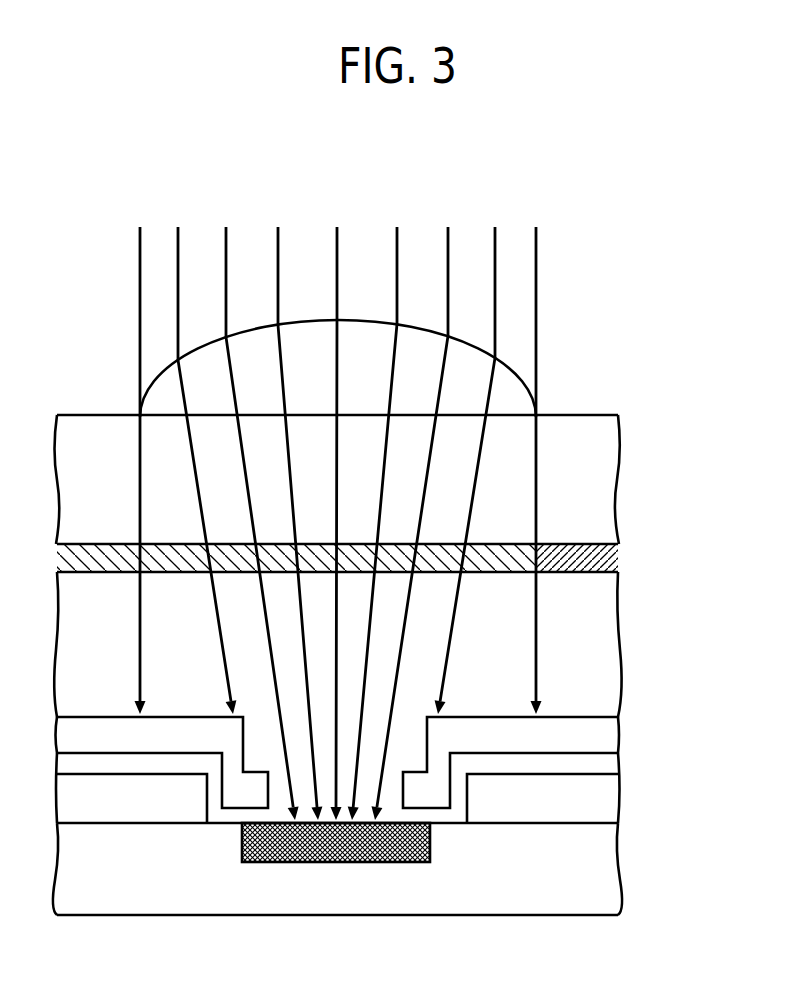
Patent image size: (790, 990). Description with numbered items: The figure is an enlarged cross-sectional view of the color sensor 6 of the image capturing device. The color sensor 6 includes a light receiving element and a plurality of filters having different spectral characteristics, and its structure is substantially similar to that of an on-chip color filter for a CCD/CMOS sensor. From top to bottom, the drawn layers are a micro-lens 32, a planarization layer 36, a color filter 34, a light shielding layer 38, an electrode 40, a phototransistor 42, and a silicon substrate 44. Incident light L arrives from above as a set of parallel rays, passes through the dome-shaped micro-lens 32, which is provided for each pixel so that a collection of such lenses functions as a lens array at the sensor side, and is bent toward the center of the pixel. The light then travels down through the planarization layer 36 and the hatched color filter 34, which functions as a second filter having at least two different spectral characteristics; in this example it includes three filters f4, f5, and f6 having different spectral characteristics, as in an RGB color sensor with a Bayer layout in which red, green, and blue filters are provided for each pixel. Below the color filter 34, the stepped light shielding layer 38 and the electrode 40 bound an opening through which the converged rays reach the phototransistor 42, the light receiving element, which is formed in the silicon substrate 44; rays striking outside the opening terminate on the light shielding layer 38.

The color sensor 6 is at (698, 291).
The incident light L is at (399, 245).
The micro-lens 32 is at (470, 358).
The color filter 34 is at (624, 562).
The planarization layer 36 is at (603, 443).
The light shielding layer 38 is at (600, 735).
The electrode 40 is at (600, 797).
The phototransistor 42 is at (380, 865).
The silicon substrate 44 is at (600, 871).
The filter f4 is at (560, 544).
The filter f5 is at (193, 544).
The filter f6 is at (113, 544).